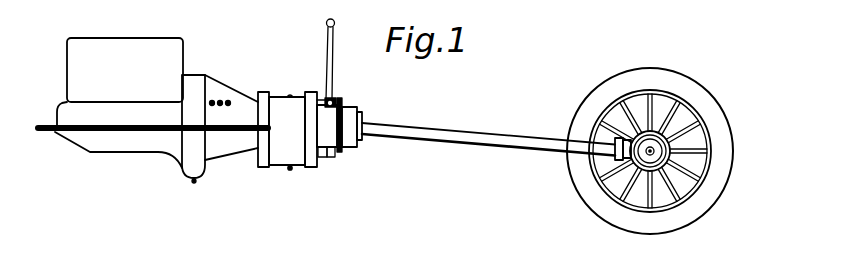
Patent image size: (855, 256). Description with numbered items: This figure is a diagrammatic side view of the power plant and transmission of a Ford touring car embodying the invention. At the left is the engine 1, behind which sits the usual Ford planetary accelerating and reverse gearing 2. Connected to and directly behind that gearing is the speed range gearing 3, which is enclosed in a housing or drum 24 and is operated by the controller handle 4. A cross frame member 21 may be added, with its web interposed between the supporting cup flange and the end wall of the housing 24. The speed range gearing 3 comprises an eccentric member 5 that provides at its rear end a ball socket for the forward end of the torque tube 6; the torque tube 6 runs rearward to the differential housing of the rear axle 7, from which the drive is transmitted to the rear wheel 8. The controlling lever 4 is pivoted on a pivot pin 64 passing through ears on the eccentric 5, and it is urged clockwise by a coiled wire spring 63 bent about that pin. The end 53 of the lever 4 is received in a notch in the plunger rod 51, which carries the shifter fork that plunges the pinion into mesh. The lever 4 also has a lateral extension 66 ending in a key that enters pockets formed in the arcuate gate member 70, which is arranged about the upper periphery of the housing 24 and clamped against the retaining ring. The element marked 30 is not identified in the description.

The engine 1 is at (174, 56).
The planetary accelerating and reverse gearing 2 is at (212, 88).
The cross frame member 21 is at (257, 168).
The speed range gearing 3 is at (276, 91).
The housing or drum 24 is at (284, 156).
The gate member 70 is at (322, 104).
The plunger rod 51 is at (323, 158).
The end of the controlling lever 53 is at (335, 158).
The eccentric member 5 is at (333, 150).
The pivot pin 64 is at (340, 101).
The hub coupling 30 is at (351, 113).
The controller handle 4 is at (334, 53).
The lateral extension 66 is at (328, 96).
The coiled wire spring 63 is at (334, 95).
The torque tube 6 is at (426, 126).
The rear axle 7 is at (654, 119).
The rear wheel 8 is at (724, 162).